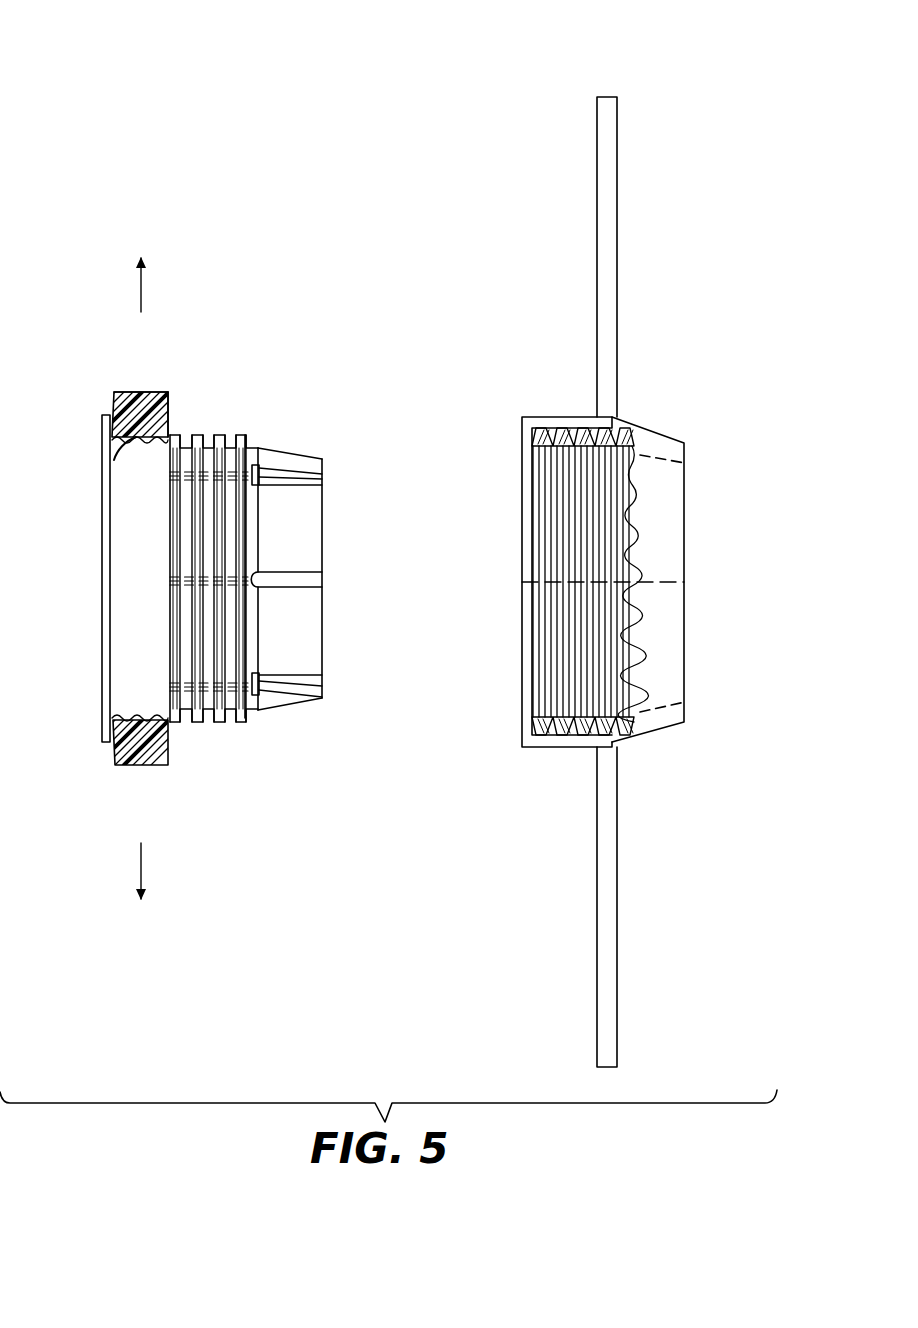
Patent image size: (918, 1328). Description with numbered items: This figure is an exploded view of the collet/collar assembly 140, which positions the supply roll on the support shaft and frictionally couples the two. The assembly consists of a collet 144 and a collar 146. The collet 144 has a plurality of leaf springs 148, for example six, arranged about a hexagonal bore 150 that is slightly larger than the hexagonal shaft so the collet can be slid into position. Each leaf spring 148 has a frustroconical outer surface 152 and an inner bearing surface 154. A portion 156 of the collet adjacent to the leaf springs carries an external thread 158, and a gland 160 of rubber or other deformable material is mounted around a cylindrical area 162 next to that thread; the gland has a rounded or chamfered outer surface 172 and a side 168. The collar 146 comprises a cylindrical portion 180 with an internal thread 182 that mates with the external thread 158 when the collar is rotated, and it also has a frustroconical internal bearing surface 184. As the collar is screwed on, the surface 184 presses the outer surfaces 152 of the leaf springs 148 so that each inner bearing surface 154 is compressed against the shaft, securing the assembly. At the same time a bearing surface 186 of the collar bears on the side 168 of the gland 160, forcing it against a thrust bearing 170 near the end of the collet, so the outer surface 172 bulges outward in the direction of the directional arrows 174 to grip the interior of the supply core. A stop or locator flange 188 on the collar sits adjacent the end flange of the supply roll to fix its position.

The collet/collar assembly 140 is at (221, 456).
The collet 144 is at (210, 515).
The collar 146 is at (600, 530).
The leaf springs 148 is at (333, 583).
The hexagonal bore 150 is at (329, 576).
The frustroconical outer surface 152 is at (337, 598).
The inner bearing surface 154 is at (282, 598).
The portion of the collet 156 is at (213, 623).
The external thread 158 is at (209, 760).
The gland 160 is at (111, 574).
The cylindrical area 162 is at (81, 470).
The side of the gland 168 is at (204, 411).
The thrust bearing 170 is at (68, 578).
The outer surface of the gland 172 is at (134, 367).
The directional arrows 174 is at (84, 576).
The cylindrical portion 180 is at (591, 532).
The internal thread 182 is at (564, 539).
The frustroconical internal bearing surface 184 is at (640, 579).
The bearing surface 186 is at (527, 582).
The stop or locator flange 188 is at (653, 582).